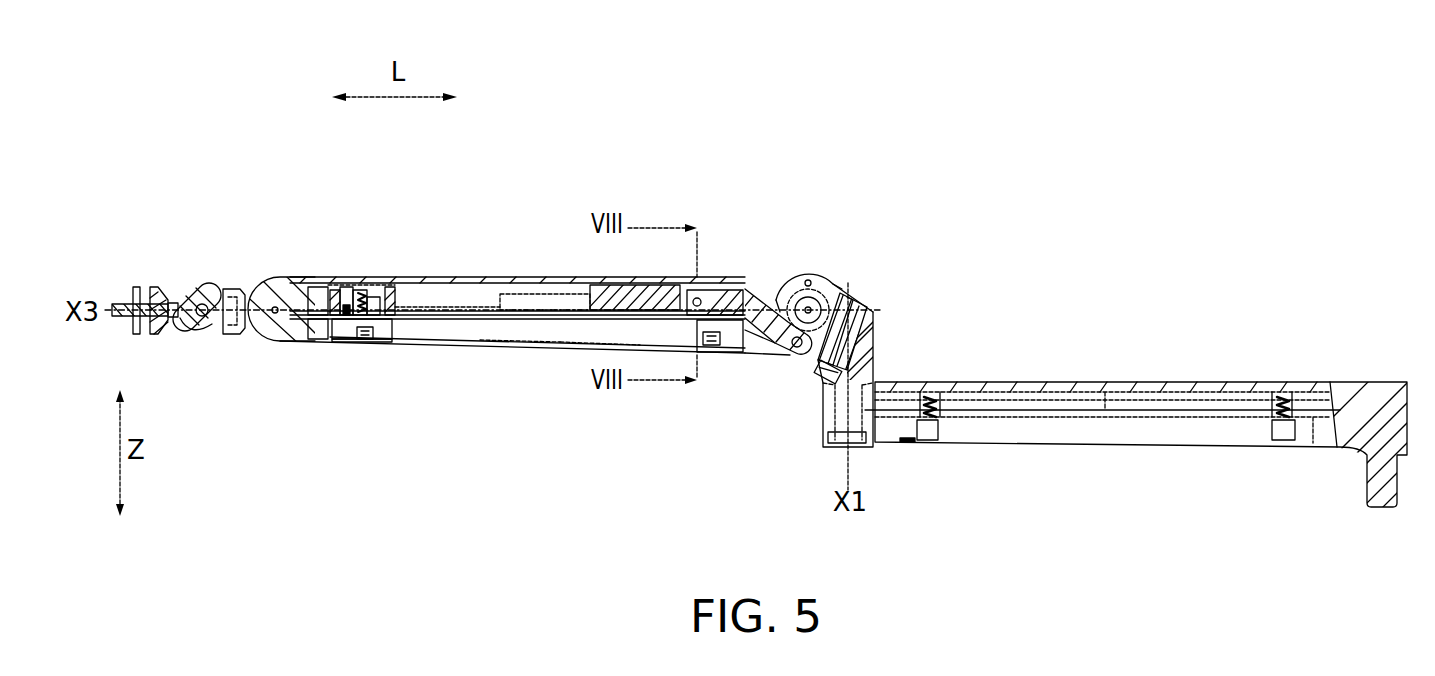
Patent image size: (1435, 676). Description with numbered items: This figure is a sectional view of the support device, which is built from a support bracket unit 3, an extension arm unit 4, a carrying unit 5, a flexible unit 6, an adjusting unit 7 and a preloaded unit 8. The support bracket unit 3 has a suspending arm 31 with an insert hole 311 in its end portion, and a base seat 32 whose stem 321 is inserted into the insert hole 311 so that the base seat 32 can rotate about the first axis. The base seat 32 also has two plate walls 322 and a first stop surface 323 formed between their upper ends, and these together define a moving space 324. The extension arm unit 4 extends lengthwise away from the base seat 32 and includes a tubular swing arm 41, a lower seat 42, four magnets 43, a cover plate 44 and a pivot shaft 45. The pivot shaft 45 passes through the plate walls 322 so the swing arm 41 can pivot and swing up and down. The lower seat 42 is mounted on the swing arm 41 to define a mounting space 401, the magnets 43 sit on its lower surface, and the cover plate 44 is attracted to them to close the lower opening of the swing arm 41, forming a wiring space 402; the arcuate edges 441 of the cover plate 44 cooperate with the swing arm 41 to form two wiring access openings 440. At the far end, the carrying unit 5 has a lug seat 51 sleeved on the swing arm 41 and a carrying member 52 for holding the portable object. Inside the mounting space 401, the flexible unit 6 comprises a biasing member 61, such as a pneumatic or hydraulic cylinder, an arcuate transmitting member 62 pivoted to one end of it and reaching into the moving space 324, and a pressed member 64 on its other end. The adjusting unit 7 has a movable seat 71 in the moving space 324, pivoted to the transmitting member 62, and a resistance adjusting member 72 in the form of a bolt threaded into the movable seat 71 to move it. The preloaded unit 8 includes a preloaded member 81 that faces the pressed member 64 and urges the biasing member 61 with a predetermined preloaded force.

The support bracket unit 3 is at (1184, 377).
The suspending arm 31 is at (1076, 380).
The base seat 32 is at (867, 357).
The insert hole 311 is at (835, 420).
The stem 321 is at (847, 430).
The plate walls 322 is at (811, 279).
The first stop surface 323 is at (836, 279).
The moving space 324 is at (772, 352).
The extension arm unit 4 is at (462, 276).
The swing arm 41 is at (503, 277).
The lower seat 42 is at (462, 347).
The magnets 43 is at (373, 345).
The cover plate 44 is at (527, 350).
The pivot shaft 45 is at (781, 279).
The mounting space 401 is at (508, 352).
The wiring space 402 is at (570, 348).
The wiring access openings 440 is at (330, 342).
The arcuate edges 441 is at (352, 347).
The carrying unit 5 is at (190, 278).
The lug seat 51 is at (214, 290).
The carrying member 52 is at (175, 330).
The flexible unit 6 is at (558, 276).
The biasing member 61 is at (420, 350).
The transmitting member 62 is at (723, 279).
The pressed member 64 is at (380, 277).
The adjusting unit 7 is at (870, 298).
The movable seat 71 is at (820, 347).
The resistance adjusting member 72 is at (863, 322).
The preloaded unit 8 is at (340, 276).
The preloaded member 81 is at (318, 282).